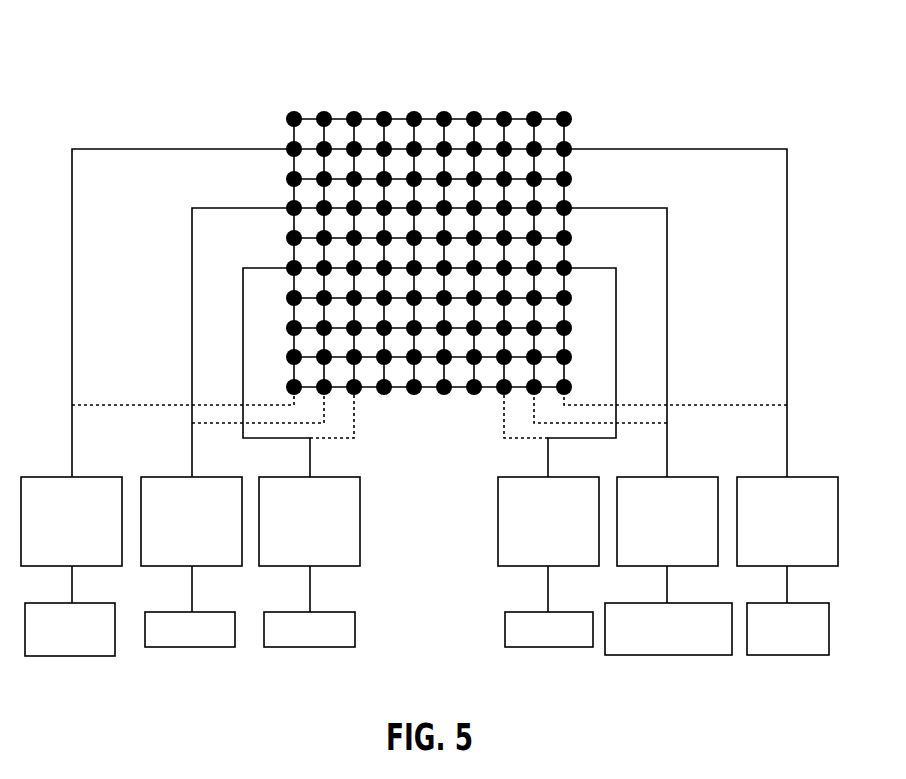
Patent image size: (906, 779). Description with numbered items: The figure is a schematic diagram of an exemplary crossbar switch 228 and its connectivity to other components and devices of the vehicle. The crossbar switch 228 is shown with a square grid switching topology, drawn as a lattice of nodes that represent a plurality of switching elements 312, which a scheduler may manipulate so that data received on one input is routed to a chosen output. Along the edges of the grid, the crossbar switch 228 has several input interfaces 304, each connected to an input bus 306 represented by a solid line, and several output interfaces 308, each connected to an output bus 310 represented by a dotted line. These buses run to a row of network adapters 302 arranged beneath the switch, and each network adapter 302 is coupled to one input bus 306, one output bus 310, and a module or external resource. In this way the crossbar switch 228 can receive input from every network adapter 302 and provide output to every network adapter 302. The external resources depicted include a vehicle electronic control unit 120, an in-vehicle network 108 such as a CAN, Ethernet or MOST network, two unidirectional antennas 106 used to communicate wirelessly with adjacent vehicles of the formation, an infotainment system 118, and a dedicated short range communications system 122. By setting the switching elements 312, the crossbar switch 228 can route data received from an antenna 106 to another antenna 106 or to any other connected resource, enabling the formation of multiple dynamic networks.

The crossbar switch 228 is at (276, 35).
The network adapter 302 is at (802, 477).
The input interface 304 is at (573, 267).
The input bus 306 is at (630, 208).
The output interface 308 is at (570, 381).
The output bus 310 is at (638, 424).
The switching element 312 is at (441, 380).
The unidirectional antenna 106 is at (505, 632).
The in-vehicle network 108 is at (198, 647).
The infotainment system 118 is at (695, 655).
The vehicle electronic control unit 120 is at (76, 656).
The dedicated short range communications system 122 is at (792, 655).